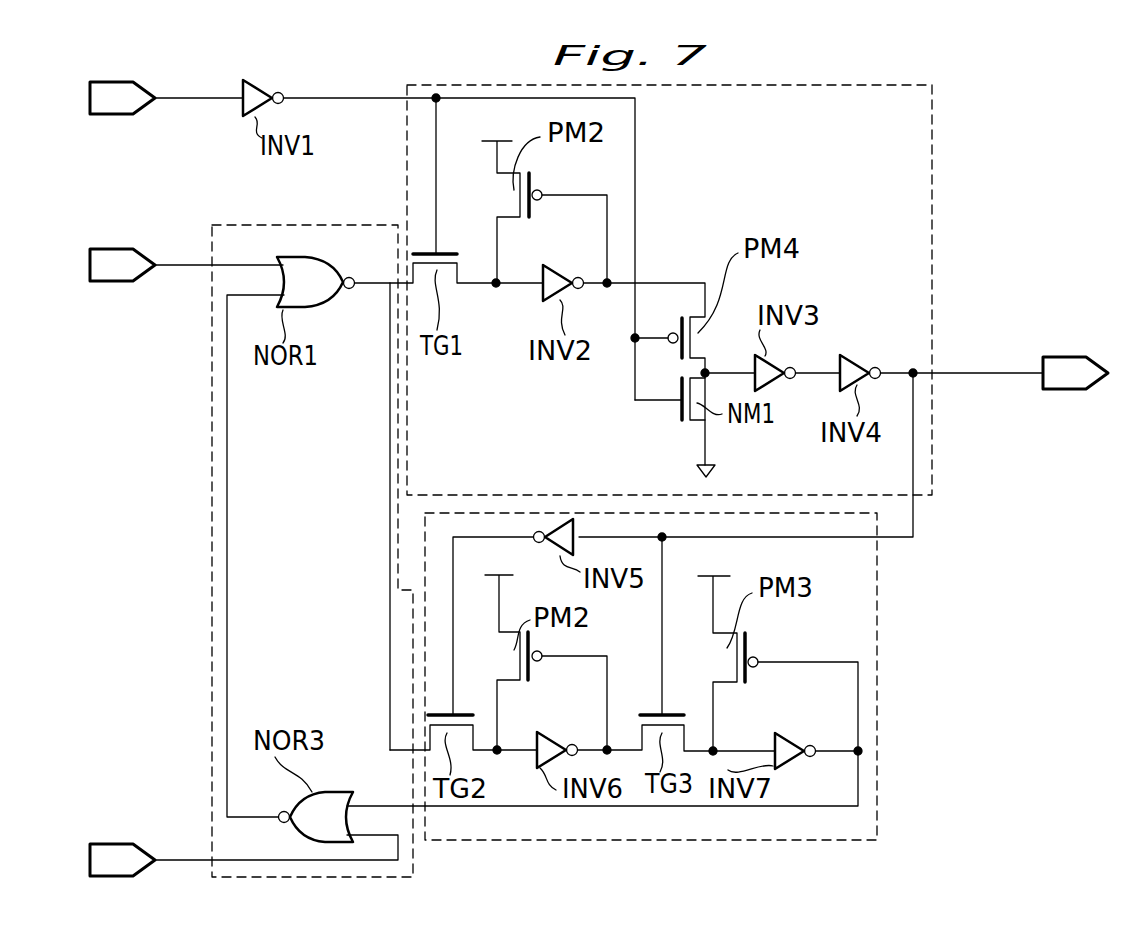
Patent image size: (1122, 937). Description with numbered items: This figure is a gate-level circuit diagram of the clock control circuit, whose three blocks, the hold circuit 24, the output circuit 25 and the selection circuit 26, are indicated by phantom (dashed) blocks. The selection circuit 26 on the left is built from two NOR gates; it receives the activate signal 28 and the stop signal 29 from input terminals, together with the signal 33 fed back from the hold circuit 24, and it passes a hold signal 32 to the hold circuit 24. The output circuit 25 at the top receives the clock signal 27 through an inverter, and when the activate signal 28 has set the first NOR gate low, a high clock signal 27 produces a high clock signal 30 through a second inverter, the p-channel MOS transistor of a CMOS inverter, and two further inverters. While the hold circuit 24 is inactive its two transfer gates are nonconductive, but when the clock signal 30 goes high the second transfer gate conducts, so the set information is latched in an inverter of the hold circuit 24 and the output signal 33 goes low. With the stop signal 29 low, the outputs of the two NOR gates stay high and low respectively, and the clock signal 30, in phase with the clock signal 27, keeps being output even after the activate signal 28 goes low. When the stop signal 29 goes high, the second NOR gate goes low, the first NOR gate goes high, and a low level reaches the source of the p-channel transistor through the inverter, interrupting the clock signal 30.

The hold circuit 24 is at (877, 790).
The output circuit 25 is at (933, 212).
The selection circuit 26 is at (210, 618).
The clock signal 27 is at (117, 81).
The activate signal 28 is at (112, 249).
The stop signal 29 is at (105, 844).
The clock signal 30 is at (1068, 357).
The hold signal 32 is at (390, 418).
The signal output from the hold circuit 33 is at (228, 540).